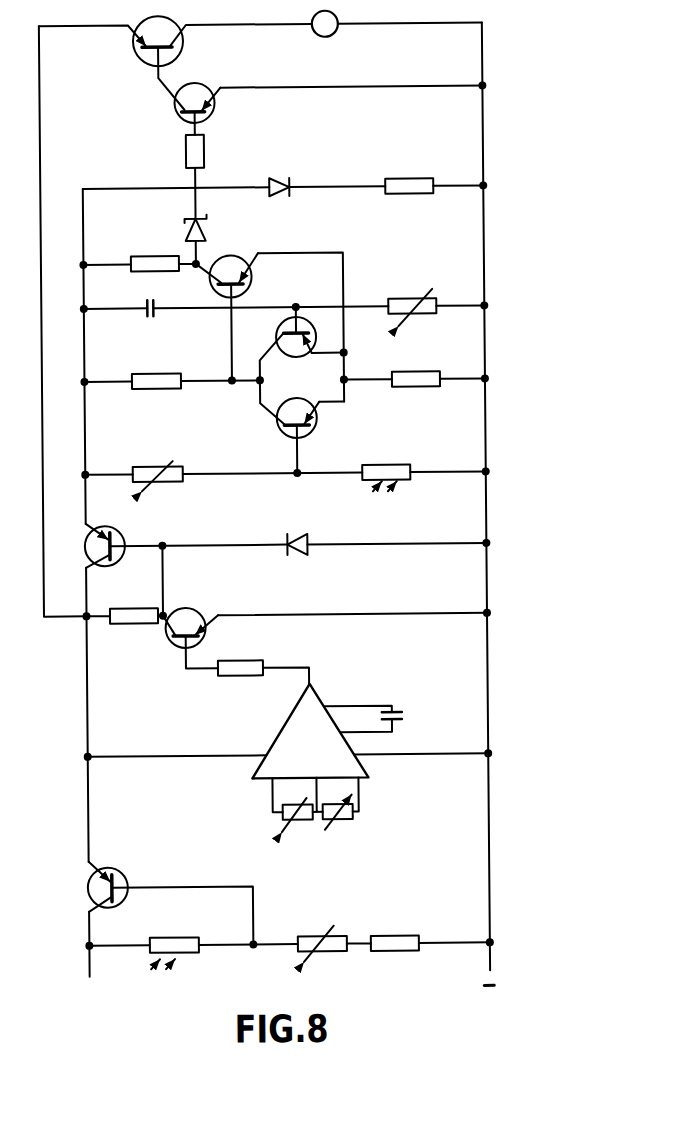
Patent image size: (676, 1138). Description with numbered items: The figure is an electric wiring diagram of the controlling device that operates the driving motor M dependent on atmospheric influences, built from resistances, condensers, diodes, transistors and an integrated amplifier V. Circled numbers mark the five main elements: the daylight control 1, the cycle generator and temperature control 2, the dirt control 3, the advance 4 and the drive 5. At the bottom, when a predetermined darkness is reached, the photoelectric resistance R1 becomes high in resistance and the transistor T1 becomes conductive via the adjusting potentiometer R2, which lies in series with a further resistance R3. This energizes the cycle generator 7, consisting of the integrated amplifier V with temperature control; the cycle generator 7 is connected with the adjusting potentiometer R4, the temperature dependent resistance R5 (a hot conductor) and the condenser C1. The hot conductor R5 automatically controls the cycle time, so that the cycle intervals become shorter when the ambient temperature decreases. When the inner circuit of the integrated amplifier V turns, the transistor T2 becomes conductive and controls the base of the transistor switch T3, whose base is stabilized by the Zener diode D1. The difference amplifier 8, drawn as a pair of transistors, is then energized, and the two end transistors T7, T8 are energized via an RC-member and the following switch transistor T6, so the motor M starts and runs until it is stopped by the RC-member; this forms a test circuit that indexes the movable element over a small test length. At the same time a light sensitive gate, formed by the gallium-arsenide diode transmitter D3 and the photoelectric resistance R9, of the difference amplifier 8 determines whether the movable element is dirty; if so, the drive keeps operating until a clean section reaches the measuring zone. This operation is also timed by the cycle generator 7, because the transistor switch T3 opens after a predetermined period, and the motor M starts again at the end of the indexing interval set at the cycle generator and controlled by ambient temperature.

The daylight control 1 is at (338, 923).
The cycle generator and temperature control 2 is at (337, 680).
The dirt control 3 is at (334, 463).
The advance 4 is at (330, 334).
The drive 5 is at (313, 490).
The cycle generator 7 is at (334, 769).
The difference amplifier 8 is at (265, 389).
The transistor T1 is at (171, 899).
The transistor T2 is at (325, 620).
The transistor switch T3 is at (186, 557).
The switch transistor T6 is at (270, 328).
The end transistor T7 is at (329, 107).
The end transistor T8 is at (203, 63).
The Zener diode D1 is at (380, 528).
The Ga-As diode transmitter D3 is at (327, 170).
The photoelectric resistance R1 is at (174, 935).
The adjusting potentiometer R2 is at (322, 931).
The resistor R3 is at (395, 926).
The adjusting potentiometer R4 is at (293, 816).
The temperature dependent resistance R5 is at (340, 816).
The photoelectric resistance R9 is at (386, 464).
The condenser C1 is at (379, 719).
The driving motor M is at (397, 22).
The integrated amplifier V is at (310, 730).